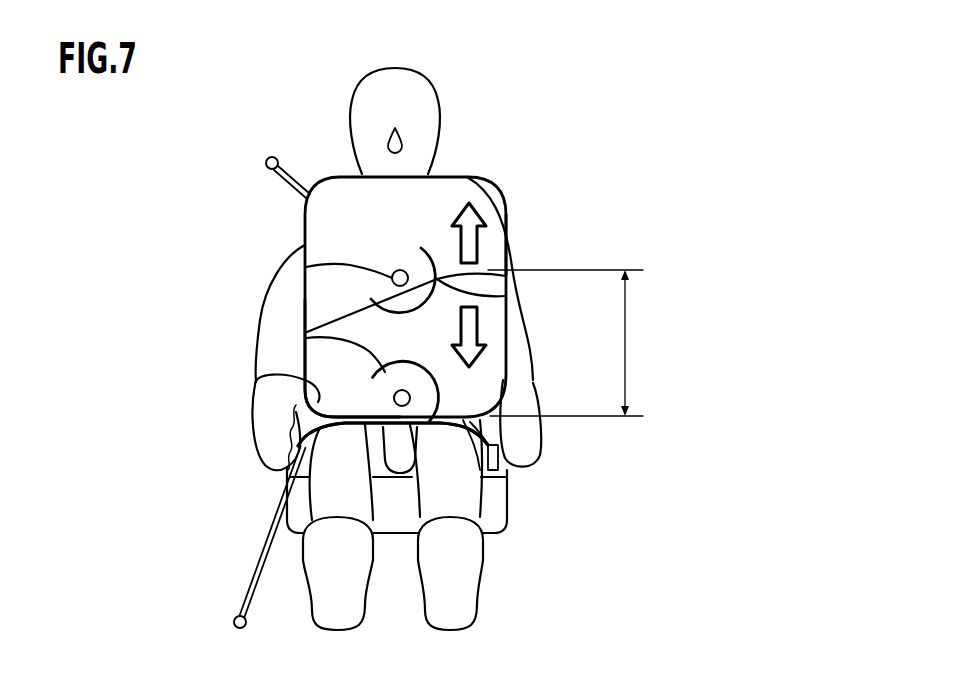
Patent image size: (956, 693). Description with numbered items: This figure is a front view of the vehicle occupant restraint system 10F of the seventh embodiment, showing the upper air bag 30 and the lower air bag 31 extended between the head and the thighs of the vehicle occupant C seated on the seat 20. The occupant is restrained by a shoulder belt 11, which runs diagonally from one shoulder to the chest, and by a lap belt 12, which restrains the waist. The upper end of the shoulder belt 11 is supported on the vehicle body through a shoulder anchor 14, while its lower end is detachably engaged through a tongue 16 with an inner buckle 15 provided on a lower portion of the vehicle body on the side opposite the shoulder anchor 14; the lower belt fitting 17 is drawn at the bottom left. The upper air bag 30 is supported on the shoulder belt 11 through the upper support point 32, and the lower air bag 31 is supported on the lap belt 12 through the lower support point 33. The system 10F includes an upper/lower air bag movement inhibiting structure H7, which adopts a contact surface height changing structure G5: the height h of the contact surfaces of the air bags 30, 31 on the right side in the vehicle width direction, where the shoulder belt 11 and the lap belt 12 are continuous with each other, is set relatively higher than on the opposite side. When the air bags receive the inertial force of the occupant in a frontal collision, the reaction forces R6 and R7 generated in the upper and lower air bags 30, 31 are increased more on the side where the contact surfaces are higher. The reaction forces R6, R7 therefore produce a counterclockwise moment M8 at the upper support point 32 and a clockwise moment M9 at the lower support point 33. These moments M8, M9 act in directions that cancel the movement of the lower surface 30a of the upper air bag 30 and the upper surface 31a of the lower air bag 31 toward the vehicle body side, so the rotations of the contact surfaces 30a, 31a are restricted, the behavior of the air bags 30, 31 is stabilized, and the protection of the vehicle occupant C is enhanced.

The vehicle occupant C is at (348, 86).
The vehicle occupant restraint system 10F is at (556, 116).
The upper air bag 30 is at (350, 204).
The contact surface height changing structure G5 is at (509, 211).
The upper/lower air bag movement inhibiting structure H7 is at (537, 320).
The upper support point 32 is at (306, 267).
The counterclockwise moment M8 is at (423, 244).
The lower surface of the upper air bag 30a is at (507, 297).
The upper surface of the lower air bag 31a is at (446, 278).
The reaction force R6 is at (480, 237).
The reaction force R7 is at (478, 333).
The lower support point 33 is at (306, 338).
The lower air bag 31 is at (320, 382).
The clockwise moment M9 is at (474, 417).
The height h is at (566, 343).
The shoulder anchor 14 is at (266, 163).
The shoulder belt 11 is at (283, 185).
The lower anchor rod 17 is at (234, 621).
The lap belt 12 is at (498, 497).
The tongue 16 is at (497, 452).
The inner buckle 15 is at (500, 461).
The seat 20 is at (524, 504).